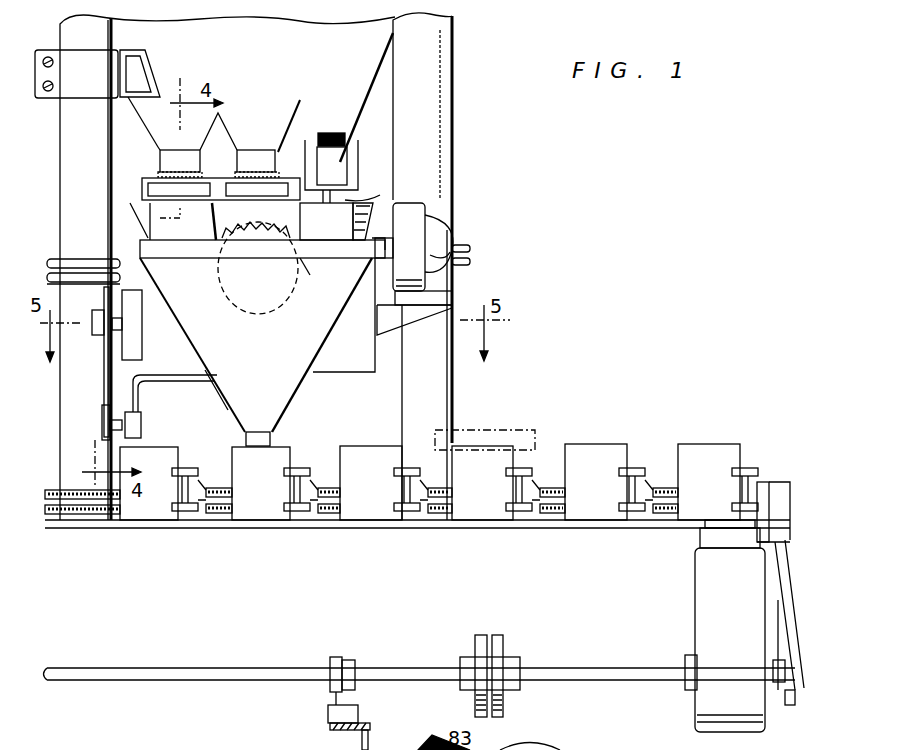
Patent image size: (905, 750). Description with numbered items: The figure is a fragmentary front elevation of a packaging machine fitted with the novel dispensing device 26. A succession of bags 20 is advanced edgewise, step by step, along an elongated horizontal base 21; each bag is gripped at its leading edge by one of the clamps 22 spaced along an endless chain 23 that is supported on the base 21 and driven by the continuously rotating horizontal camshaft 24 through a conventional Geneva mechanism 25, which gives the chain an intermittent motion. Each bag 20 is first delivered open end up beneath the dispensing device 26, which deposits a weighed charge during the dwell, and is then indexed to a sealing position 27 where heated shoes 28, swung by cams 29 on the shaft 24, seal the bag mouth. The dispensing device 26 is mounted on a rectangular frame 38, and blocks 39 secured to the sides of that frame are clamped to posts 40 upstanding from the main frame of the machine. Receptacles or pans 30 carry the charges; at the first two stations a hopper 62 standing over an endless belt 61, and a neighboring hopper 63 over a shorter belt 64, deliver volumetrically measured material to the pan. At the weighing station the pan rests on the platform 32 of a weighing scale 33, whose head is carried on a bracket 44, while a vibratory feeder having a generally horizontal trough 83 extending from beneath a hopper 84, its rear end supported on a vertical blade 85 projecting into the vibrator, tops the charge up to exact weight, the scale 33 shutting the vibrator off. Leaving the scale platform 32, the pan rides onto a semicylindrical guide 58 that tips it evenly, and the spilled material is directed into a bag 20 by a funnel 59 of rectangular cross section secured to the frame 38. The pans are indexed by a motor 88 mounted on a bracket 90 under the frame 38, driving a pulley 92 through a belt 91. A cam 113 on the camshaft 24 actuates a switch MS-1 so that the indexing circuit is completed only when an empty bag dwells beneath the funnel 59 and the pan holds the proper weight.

The bags 20 is at (368, 448).
The base 21 is at (331, 525).
The clamps 22 is at (630, 468).
The endless chain 23 is at (440, 516).
The camshaft 24 is at (425, 668).
The Geneva mechanism 25 is at (685, 605).
The dispensing device 26 is at (467, 177).
The sealing position 27 is at (506, 412).
The heated shoes 28 is at (530, 428).
The cams 29 is at (498, 635).
The receptacles 30 is at (380, 207).
The scale platform 32 is at (370, 262).
The weighing scale 33 is at (425, 217).
The rectangular frame 38 is at (357, 362).
The blocks 39 is at (120, 280).
The posts 40 is at (68, 199).
The bracket 44 is at (410, 318).
The semicylindrical guide 58 is at (322, 246).
The funnel 59 is at (322, 322).
The endless belt 61 is at (152, 174).
The hopper 62 is at (158, 130).
The hopper 63 is at (250, 128).
The shorter belt 64 is at (232, 180).
The trough 83 is at (345, 162).
The hopper 84 is at (352, 93).
The vertical blade 85 is at (368, 186).
The motor 88 is at (210, 395).
The bracket 90 is at (176, 378).
The belt 91 is at (104, 377).
The pulley 92 is at (100, 338).
The cam 113 is at (333, 665).
The switch MS-1 is at (330, 717).